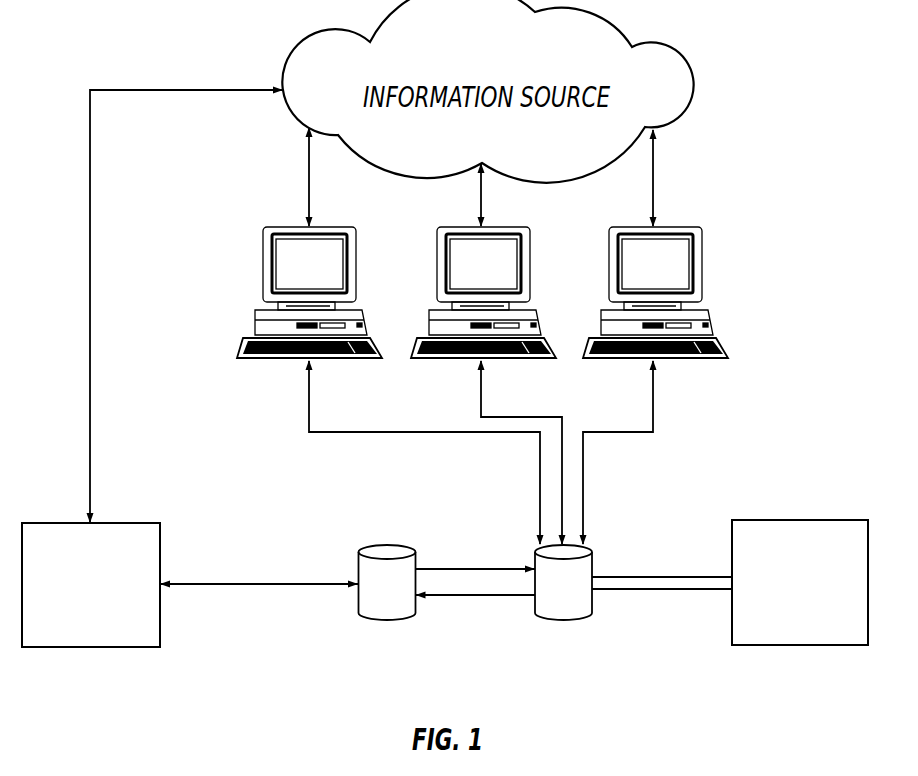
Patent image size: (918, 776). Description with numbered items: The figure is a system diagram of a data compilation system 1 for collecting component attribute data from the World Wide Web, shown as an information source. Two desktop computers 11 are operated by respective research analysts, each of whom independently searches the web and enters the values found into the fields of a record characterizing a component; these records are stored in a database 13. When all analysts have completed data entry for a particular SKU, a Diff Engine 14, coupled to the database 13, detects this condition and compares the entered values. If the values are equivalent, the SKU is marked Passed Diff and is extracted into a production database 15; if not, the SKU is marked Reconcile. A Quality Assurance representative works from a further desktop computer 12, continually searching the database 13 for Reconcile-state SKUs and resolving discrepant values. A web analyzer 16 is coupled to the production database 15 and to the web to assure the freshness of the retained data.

The data compilation system 1 is at (735, 118).
The desktop computers 11 is at (436, 285).
The desktop computer 12 is at (263, 285).
The database 13 is at (565, 621).
The Diff Engine 14 is at (800, 645).
The production database 15 is at (388, 621).
The web analyzer 16 is at (90, 647).